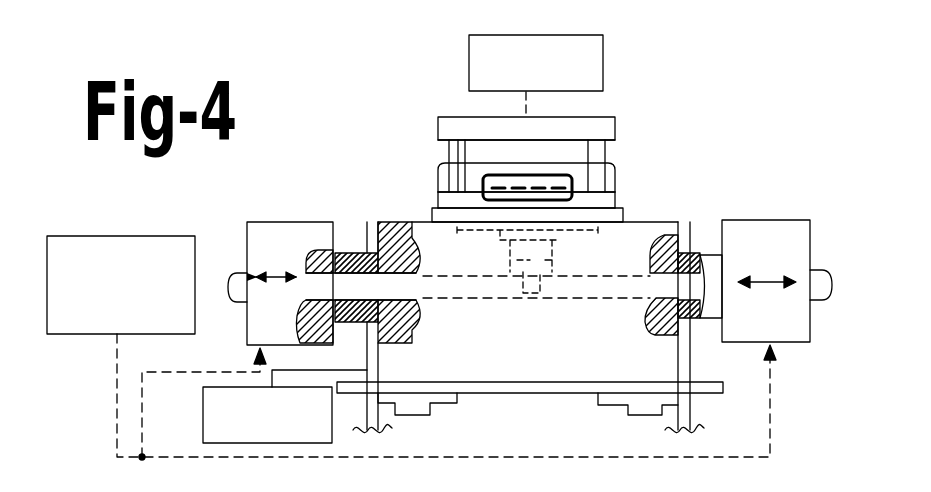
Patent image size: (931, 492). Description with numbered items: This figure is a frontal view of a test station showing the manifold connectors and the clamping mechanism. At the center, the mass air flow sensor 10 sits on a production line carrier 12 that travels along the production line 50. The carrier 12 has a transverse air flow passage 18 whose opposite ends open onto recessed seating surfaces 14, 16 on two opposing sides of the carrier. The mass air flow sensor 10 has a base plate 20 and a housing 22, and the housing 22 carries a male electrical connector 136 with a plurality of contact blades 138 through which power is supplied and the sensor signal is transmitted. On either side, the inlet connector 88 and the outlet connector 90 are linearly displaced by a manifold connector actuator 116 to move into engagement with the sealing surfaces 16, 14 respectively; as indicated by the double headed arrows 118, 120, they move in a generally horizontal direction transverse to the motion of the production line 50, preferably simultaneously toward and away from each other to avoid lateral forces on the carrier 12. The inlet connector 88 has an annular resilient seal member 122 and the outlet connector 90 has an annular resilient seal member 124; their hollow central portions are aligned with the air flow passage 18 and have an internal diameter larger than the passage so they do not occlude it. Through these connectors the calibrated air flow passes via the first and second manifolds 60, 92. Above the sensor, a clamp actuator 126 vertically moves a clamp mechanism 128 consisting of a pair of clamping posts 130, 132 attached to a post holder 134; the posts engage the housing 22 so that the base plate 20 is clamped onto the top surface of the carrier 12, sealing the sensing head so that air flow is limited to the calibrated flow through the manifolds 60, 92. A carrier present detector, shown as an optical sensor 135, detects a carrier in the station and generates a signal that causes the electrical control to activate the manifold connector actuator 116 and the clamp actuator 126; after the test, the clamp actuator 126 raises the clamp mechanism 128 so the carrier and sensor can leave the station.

The mass air flow sensor 10 is at (614, 168).
The production line carrier 12 is at (663, 221).
The recessed seating surface 14 is at (376, 236).
The recessed seating surface 16 is at (686, 352).
The air flow passage 18 is at (397, 287).
The base plate 20 is at (625, 218).
The housing 22 is at (436, 178).
The production line 50 is at (508, 394).
The first manifold 60 is at (236, 270).
The inlet connector 88 is at (778, 219).
The outlet connector 90 is at (267, 221).
The second manifold 92 is at (820, 269).
The manifold connector actuator 116 is at (108, 236).
The double headed arrow 118 is at (273, 276).
The double headed arrow 120 is at (766, 280).
The annular resilient seal member 122 is at (724, 256).
The annular resilient seal member 124 is at (345, 252).
The clamp actuator 126 is at (525, 35).
The clamp mechanism 128 is at (377, 115).
The clamping post 130 is at (446, 150).
The clamping post 132 is at (614, 140).
The post holder 134 is at (478, 116).
The optical sensor 135 is at (203, 420).
The electrical connector 136 is at (558, 176).
The contact blades 138 is at (518, 176).